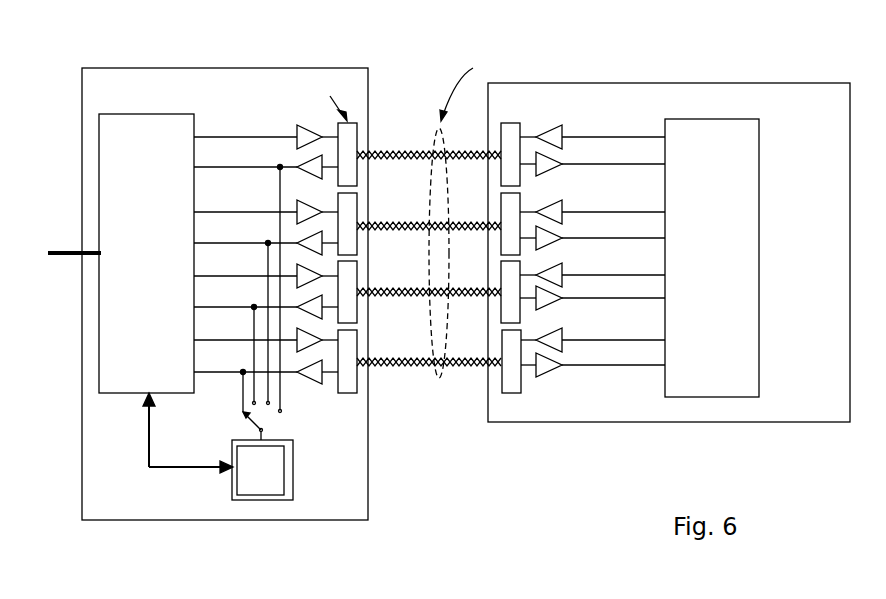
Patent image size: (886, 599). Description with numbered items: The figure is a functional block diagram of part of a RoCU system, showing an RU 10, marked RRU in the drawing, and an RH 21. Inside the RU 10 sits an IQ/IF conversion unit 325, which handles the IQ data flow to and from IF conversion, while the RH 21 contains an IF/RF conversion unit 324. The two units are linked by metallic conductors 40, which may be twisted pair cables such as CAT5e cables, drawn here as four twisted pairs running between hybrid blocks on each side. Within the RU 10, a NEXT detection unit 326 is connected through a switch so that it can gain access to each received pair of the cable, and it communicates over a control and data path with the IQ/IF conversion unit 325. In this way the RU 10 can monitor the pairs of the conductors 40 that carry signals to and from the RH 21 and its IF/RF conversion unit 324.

The RU 10 is at (322, 69).
The RH 21 is at (623, 82).
The metallic conductors 40 is at (429, 216).
The IF/RF conversion unit 324 is at (712, 258).
The IQ/IF conversion unit 325 is at (146, 253).
The NEXT detection unit 326 is at (293, 477).